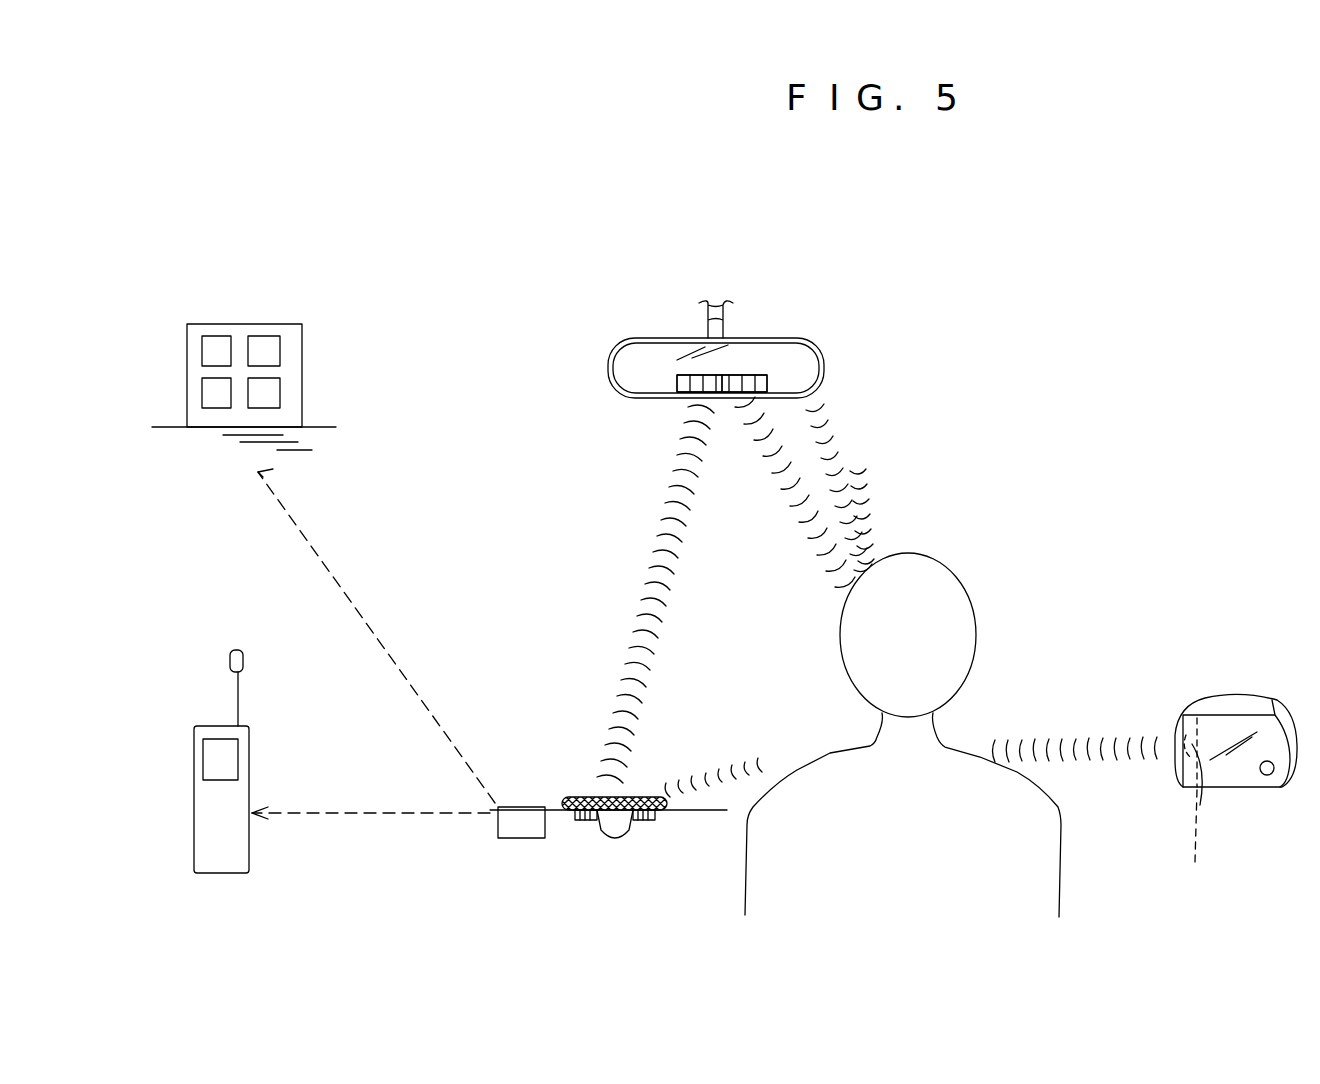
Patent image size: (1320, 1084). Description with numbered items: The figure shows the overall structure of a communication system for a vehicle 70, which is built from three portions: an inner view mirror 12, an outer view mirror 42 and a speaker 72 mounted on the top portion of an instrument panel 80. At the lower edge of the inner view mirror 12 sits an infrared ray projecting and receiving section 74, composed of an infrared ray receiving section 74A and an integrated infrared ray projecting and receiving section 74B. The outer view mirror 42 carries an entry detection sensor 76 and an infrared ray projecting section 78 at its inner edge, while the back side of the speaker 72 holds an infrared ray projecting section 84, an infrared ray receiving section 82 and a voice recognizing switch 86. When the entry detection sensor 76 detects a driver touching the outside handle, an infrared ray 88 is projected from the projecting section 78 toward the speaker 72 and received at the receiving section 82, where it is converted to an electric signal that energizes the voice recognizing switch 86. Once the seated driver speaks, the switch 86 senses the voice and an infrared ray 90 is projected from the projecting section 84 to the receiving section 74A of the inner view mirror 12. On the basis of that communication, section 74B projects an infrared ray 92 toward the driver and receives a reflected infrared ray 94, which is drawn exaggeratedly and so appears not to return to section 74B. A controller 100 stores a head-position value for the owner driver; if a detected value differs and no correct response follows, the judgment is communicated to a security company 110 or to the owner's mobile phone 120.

The inner view mirror 12 is at (841, 362).
The outer view mirror 42 is at (1234, 684).
The communication system for a vehicle 70 is at (980, 466).
The speaker 72 is at (595, 787).
The infrared ray projecting and receiving section 74 is at (541, 452).
The infrared ray receiving section 74A is at (688, 393).
The infrared ray projecting and receiving section 74B is at (747, 394).
The entry detection sensor 76 is at (1266, 776).
The infrared ray projecting section 78 is at (1183, 842).
The instrument panel 80 is at (513, 807).
The infrared ray receiving section 82 is at (648, 822).
The infrared ray projecting section 84 is at (583, 822).
The voice recognizing switch 86 is at (617, 828).
The infrared ray 88 is at (1068, 745).
The infrared ray 90 is at (660, 645).
The infrared ray 92 is at (802, 488).
The reflected infrared ray 94 is at (860, 500).
The controller 100 is at (513, 835).
The security company 110 is at (240, 330).
The mobile phone 120 is at (225, 876).